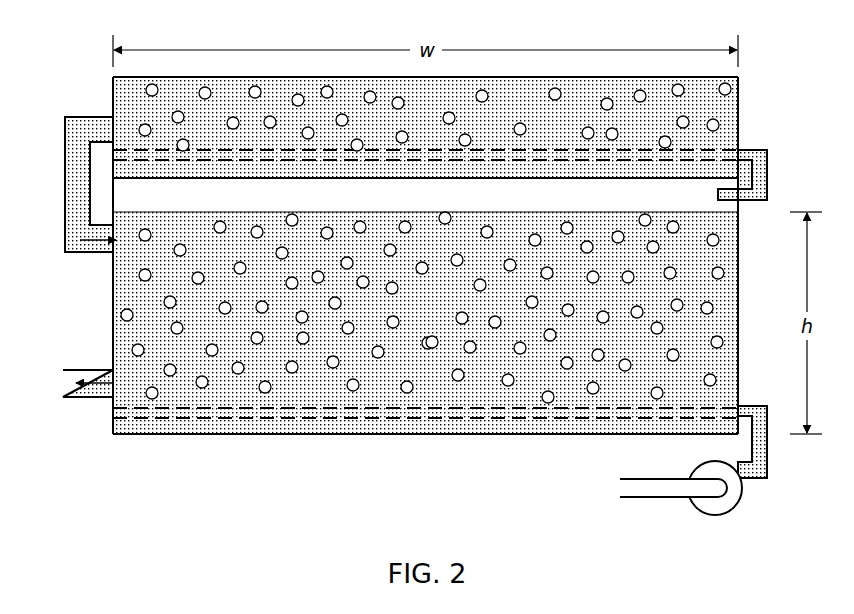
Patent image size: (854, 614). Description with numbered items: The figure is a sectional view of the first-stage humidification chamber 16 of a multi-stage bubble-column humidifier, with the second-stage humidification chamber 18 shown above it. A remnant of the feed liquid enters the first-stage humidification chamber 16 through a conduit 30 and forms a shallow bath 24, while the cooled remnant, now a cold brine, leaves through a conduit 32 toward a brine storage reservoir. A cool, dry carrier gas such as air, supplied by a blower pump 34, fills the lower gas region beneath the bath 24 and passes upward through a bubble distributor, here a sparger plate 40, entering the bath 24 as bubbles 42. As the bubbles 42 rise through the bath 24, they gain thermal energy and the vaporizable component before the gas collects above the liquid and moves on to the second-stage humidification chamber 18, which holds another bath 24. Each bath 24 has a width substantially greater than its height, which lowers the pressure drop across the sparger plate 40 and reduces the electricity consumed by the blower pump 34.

The first-stage humidification chamber 16 is at (388, 285).
The second-stage humidification chamber 18 is at (100, 97).
The bath 24 is at (437, 125).
The conduit 30 is at (78, 210).
The conduit 32 is at (92, 388).
The blower pump 34 is at (708, 470).
The bubble distributor (sparger plate) 40 is at (207, 411).
The bubbles 42 is at (651, 394).